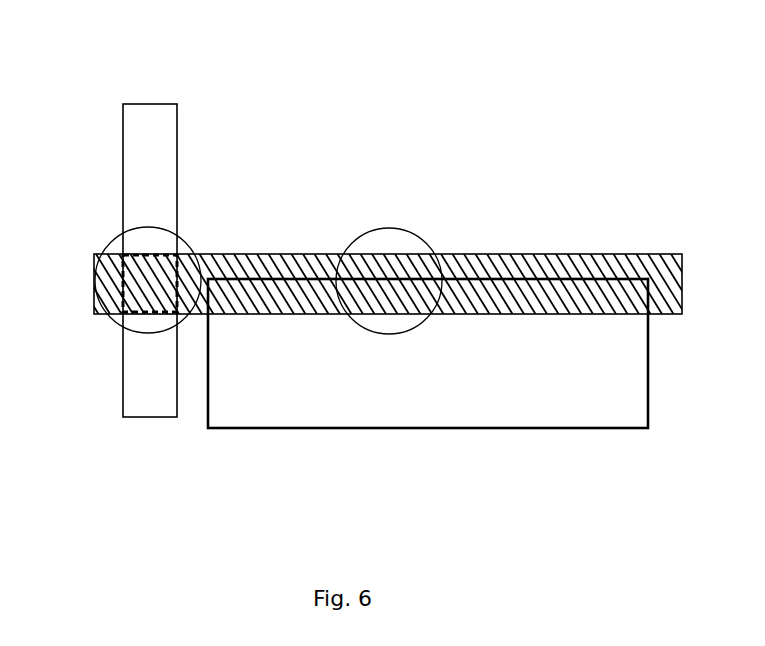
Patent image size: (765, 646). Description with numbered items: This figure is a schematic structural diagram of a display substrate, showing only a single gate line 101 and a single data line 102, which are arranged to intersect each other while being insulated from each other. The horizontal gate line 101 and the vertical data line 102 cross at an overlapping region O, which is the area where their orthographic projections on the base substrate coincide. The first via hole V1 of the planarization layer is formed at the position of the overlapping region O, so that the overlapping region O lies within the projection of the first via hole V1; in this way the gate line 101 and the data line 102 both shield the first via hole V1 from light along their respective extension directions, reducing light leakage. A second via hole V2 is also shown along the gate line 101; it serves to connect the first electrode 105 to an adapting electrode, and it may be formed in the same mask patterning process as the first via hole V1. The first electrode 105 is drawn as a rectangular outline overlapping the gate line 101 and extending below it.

The data line 102 is at (148, 116).
The gate line 101 is at (548, 254).
The first electrode 105 is at (401, 429).
The first via hole V1 is at (113, 242).
The second via hole V2 is at (389, 228).
The overlapping region O is at (122, 313).